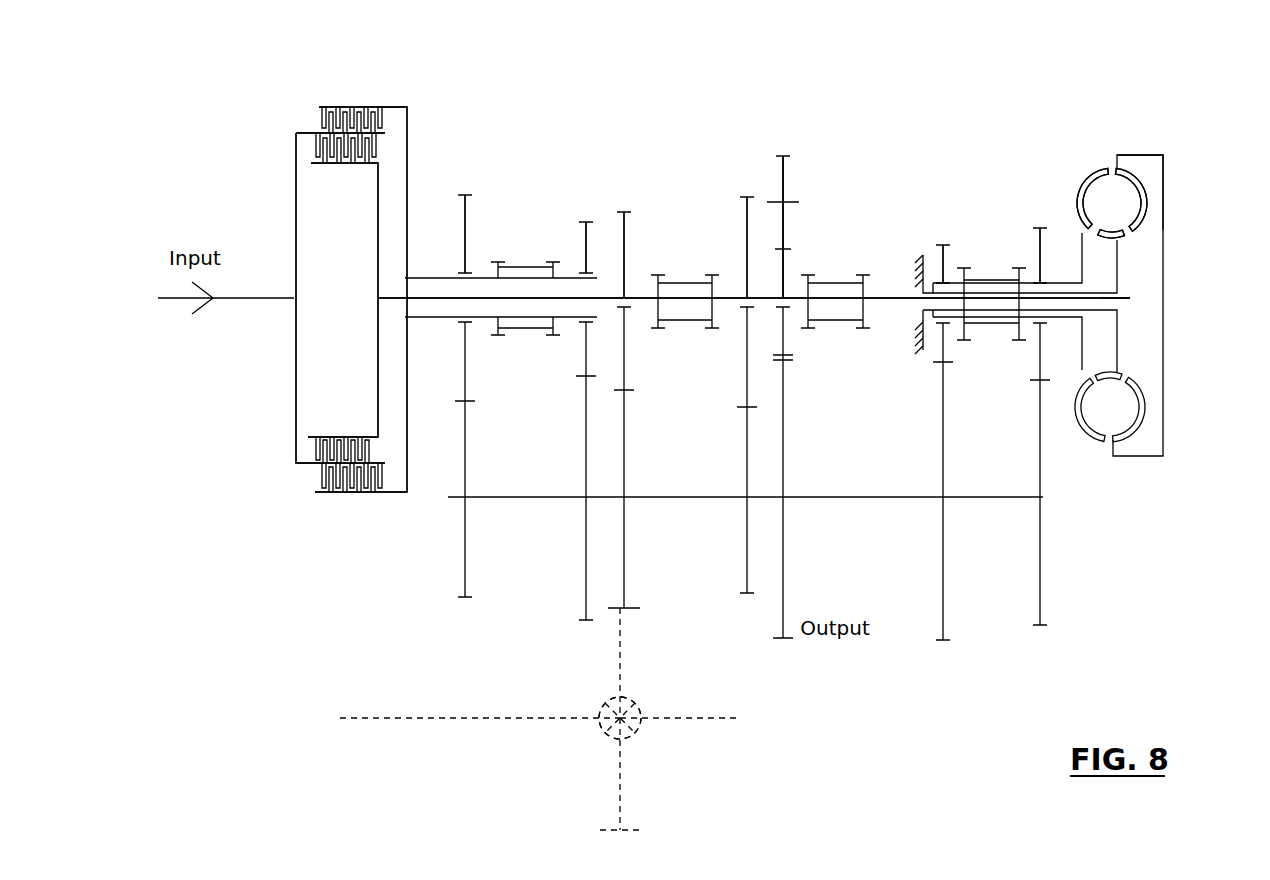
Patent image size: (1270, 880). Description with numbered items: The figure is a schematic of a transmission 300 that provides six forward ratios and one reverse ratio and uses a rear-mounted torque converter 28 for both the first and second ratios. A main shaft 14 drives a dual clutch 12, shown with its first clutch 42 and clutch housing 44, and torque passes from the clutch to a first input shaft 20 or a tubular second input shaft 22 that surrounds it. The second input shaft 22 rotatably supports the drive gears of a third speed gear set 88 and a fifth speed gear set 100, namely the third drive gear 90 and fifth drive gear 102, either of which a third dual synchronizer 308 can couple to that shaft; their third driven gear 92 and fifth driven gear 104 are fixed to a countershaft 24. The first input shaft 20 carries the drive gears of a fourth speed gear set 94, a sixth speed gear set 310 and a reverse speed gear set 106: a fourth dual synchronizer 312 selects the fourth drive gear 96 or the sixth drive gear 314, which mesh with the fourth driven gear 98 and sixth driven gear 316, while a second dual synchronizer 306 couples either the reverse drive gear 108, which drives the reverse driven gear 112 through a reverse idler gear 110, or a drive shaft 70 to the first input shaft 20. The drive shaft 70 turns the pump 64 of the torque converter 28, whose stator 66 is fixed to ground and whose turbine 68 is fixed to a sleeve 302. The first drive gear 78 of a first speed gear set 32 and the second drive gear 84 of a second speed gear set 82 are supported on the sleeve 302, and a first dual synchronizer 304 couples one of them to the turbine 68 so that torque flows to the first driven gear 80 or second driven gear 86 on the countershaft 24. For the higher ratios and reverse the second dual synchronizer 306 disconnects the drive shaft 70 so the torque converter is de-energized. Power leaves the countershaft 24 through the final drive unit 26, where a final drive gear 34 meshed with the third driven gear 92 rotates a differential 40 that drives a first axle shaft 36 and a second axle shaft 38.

The main shaft 14 is at (252, 298).
The first input shaft 20 is at (427, 295).
The second input shaft 22 is at (448, 278).
The countershaft 24 is at (815, 497).
The transmission 300 is at (905, 95).
The dual clutch 12 is at (342, 102).
The clutch housing 44 is at (382, 100).
The first clutch 42 is at (336, 165).
The fifth speed gear set 100 is at (471, 165).
The fifth drive gear 102 is at (468, 213).
The fifth driven gear 104 is at (465, 450).
The third speed gear set 88 is at (587, 188).
The third drive gear 90 is at (586, 242).
The third driven gear 92 is at (583, 420).
The fourth speed gear set 94 is at (627, 177).
The fourth drive gear 96 is at (624, 242).
The fourth driven gear 98 is at (624, 460).
The sixth speed gear set 310 is at (738, 160).
The sixth drive gear 314 is at (745, 215).
The sixth driven gear 316 is at (745, 447).
The reverse speed gear set 106 is at (787, 128).
The reverse idler gear 110 is at (783, 181).
The reverse drive gear 108 is at (783, 270).
The reverse driven gear 112 is at (783, 425).
The first speed gear set 32 is at (943, 205).
The first drive gear 78 is at (938, 258).
The first driven gear 80 is at (943, 444).
The second speed gear set 82 is at (1040, 195).
The second drive gear 84 is at (1040, 248).
The second driven gear 86 is at (1040, 444).
The third dual synchronizer 308 is at (525, 342).
The fourth dual synchronizer 312 is at (683, 330).
The second dual synchronizer 306 is at (835, 332).
The first dual synchronizer 304 is at (990, 344).
The sleeve 302 is at (1058, 320).
The torque converter 28 is at (1130, 133).
The turbine 68 is at (1097, 170).
The stator 66 is at (1101, 232).
The pump 64 is at (1145, 192).
The drive shaft 70 is at (1130, 302).
The final drive gear 34 is at (622, 662).
The second axle shaft 38 is at (373, 718).
The first axle shaft 36 is at (703, 718).
The differential 40 is at (610, 703).
The final drive unit 26 is at (705, 755).